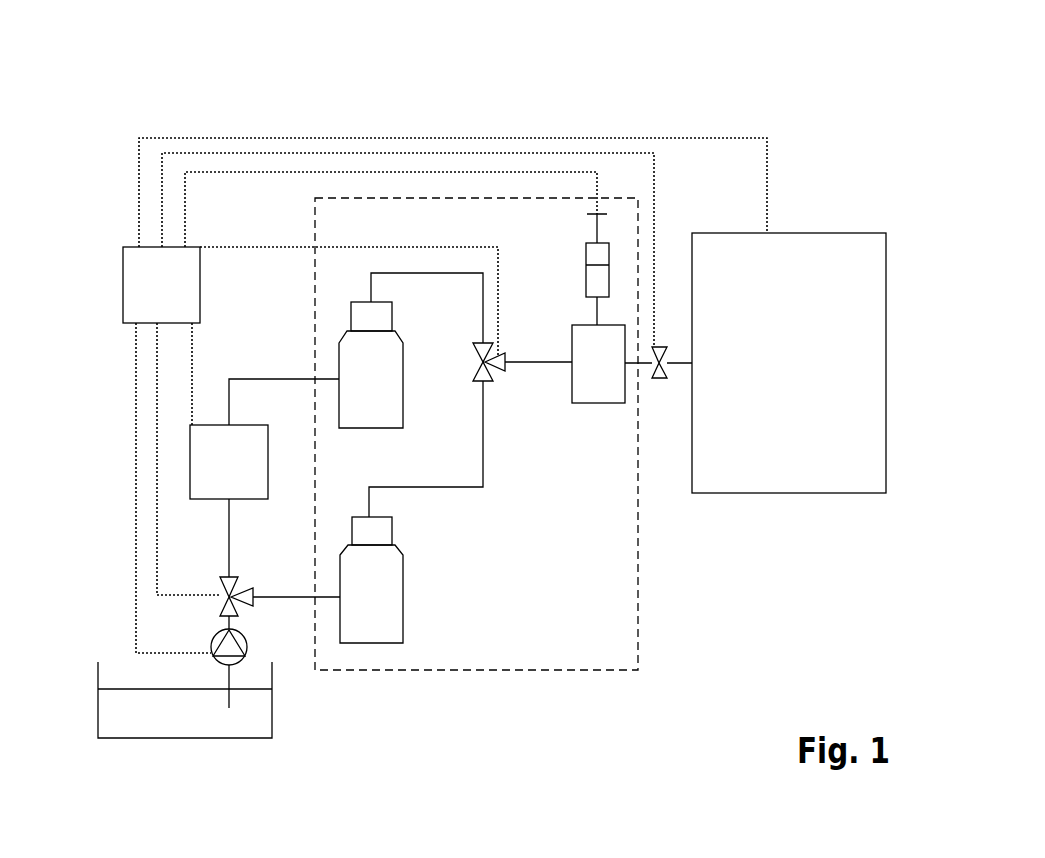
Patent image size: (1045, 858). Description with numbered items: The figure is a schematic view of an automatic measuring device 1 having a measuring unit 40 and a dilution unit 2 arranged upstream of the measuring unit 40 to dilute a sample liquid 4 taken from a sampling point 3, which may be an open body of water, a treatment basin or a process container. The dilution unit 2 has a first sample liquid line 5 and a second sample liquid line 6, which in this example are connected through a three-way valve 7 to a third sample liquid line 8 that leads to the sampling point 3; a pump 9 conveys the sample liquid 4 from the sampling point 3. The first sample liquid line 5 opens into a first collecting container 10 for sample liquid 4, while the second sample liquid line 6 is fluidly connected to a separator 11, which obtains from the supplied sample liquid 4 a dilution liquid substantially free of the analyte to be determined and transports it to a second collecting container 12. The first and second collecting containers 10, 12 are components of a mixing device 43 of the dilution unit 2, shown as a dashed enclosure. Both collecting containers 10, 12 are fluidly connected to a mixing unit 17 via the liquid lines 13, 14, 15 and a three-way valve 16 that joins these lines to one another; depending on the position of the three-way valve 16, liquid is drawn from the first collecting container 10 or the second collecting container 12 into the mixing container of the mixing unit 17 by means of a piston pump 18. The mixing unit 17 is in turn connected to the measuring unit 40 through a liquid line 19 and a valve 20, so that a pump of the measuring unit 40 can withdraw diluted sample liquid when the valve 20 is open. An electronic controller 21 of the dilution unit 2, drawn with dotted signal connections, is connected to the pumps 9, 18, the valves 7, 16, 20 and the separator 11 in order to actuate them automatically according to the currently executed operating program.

The automatic measuring device 1 is at (572, 83).
The dilution unit 2 is at (200, 115).
The sampling point 3 is at (217, 742).
The sample liquid 4 is at (173, 713).
The first sample liquid line 5 is at (297, 597).
The second sample liquid line 6 is at (230, 545).
The three-way valve 7 is at (225, 597).
The third sample liquid line 8 is at (227, 682).
The pump 9 is at (212, 640).
The first collecting container 10 is at (380, 632).
The separator 11 is at (217, 473).
The second collecting container 12 is at (355, 350).
The liquid line 13 is at (443, 488).
The liquid line 14 is at (371, 273).
The liquid line 15 is at (528, 362).
The three-way valve 16 is at (485, 383).
The mixing unit 17 is at (605, 390).
The piston pump 18 is at (597, 243).
The liquid line 19 is at (685, 363).
The valve 20 is at (659, 346).
The electronic controller 21 is at (135, 280).
The measuring unit 40 is at (832, 242).
The mixing device 43 is at (363, 197).